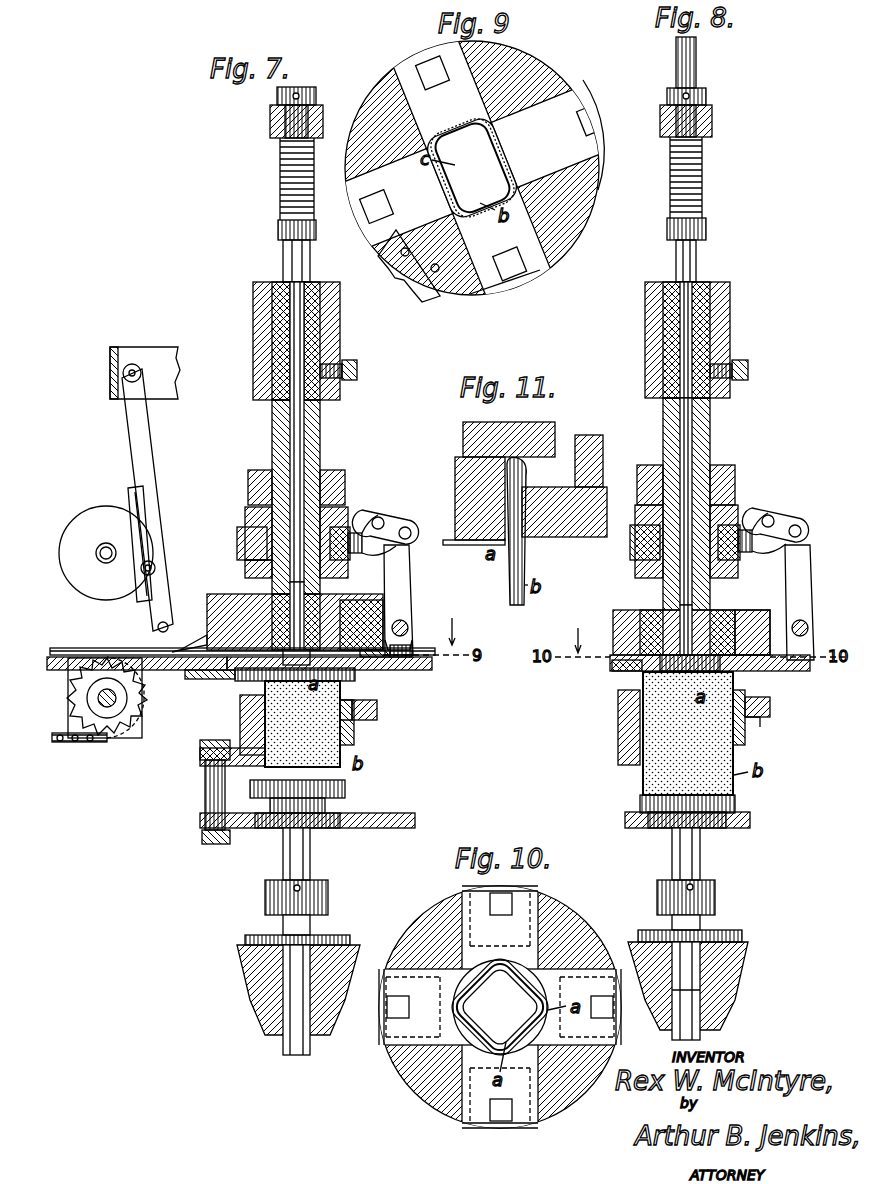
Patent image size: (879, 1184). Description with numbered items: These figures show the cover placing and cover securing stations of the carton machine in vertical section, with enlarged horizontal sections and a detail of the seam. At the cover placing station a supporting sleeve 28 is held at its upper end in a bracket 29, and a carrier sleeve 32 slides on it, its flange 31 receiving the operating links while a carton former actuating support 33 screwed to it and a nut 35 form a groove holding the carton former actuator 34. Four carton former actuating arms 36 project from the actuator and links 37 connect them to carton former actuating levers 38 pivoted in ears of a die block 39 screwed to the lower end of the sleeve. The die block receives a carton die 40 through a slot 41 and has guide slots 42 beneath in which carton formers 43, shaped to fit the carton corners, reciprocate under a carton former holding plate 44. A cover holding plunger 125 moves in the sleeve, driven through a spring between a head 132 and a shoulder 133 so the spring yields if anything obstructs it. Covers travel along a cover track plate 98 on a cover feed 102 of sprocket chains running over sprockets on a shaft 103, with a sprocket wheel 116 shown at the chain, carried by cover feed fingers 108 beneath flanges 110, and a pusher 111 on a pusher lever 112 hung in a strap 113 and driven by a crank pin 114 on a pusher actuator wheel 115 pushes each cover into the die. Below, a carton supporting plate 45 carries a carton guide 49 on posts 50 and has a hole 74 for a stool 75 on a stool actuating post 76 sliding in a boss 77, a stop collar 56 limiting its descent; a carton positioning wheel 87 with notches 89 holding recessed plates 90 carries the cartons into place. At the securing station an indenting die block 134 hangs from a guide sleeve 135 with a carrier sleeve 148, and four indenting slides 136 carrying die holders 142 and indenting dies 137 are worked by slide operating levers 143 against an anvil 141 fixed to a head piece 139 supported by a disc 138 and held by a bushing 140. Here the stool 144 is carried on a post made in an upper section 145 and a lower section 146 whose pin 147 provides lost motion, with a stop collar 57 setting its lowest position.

In FIG. 7, the supporting sleeve 28 is at (320, 432).
In FIG. 7, the bracket 29 is at (340, 342).
In FIG. 8, the bracket 29 is at (730, 342).
In FIG. 7, the flange 31 is at (340, 470).
In FIG. 7, the carrier sleeve 32 is at (340, 510).
In FIG. 7, the carton former actuating support 33 is at (250, 510).
In FIG. 7, the carton former actuator 34 is at (242, 532).
In FIG. 7, the nut 35 is at (247, 570).
In FIG. 8, the nut 35 is at (636, 570).
In FIG. 7, the carton former actuating arms 36 is at (388, 517).
In FIG. 7, the links 37 is at (408, 528).
In FIG. 7, the carton former actuating levers 38 is at (412, 578).
In FIG. 7, the die block 39 is at (380, 620).
In FIG. 9, the die block 39 is at (570, 190).
In FIG. 7, the carton die 40 is at (370, 612).
In FIG. 7, the slot 41 is at (215, 610).
In FIG. 7, the guide slots 42 is at (405, 668).
In FIG. 9, the guide slots 42 is at (588, 205).
In FIG. 7, the carton formers 43 is at (380, 668).
In FIG. 9, the carton formers 43 is at (528, 262).
In FIG. 7, the carton former holding plate 44 is at (232, 680).
In FIG. 7, the carton supporting plate 45 is at (378, 828).
In FIG. 8, the carton supporting plate 45 is at (750, 822).
In FIG. 7, the carton guide 49 is at (240, 717).
In FIG. 7, the posts 50 is at (206, 796).
In FIG. 7, the stop collar 56 is at (328, 890).
In FIG. 8, the stop collar 57 is at (715, 892).
In FIG. 7, the hole 74 is at (330, 812).
In FIG. 7, the stool 75 is at (345, 786).
In FIG. 7, the stool actuating post 76 is at (311, 845).
In FIG. 7, the boss 77 is at (250, 988).
In FIG. 8, the boss 77 is at (732, 970).
In FIG. 7, the carton positioning wheel 87 is at (377, 715).
In FIG. 8, the carton positioning wheel 87 is at (768, 718).
In FIG. 7, the notches 89 is at (376, 684).
In FIG. 8, the notches 89 is at (770, 704).
In FIG. 7, the recessed plates 90 is at (354, 736).
In FIG. 8, the recessed plates 90 is at (745, 740).
In FIG. 7, the cover track plate 98 is at (190, 678).
In FIG. 9, the cover track plate 98 is at (425, 288).
In FIG. 7, the cover feed 102 is at (70, 740).
In FIG. 7, the shaft 103 is at (107, 707).
In FIG. 7, the cover feed fingers 108 is at (80, 658).
In FIG. 7, the flanges 110 is at (128, 650).
In FIG. 7, the pusher 111 is at (200, 640).
In FIG. 7, the pusher lever 112 is at (153, 465).
In FIG. 7, the strap 113 is at (170, 348).
In FIG. 7, the crank pin 114 is at (142, 572).
In FIG. 7, the pusher actuator wheel 115 is at (106, 506).
In FIG. 7, the sprocket 116 is at (135, 735).
In FIG. 7, the cover holding plunger 125 is at (292, 428).
In FIG. 7, the head 132 is at (272, 118).
In FIG. 7, the shoulder 133 is at (280, 228).
In FIG. 8, the indenting die block 134 is at (628, 612).
In FIG. 10, the indenting die block 134 is at (572, 915).
In FIG. 8, the guide sleeve 135 is at (710, 432).
In FIG. 8, the indenting slides 136 is at (784, 677).
In FIG. 10, the indenting slides 136 is at (522, 905).
In FIG. 11, the indenting dies 137 is at (583, 525).
In FIG. 8, the indenting dies 137 is at (730, 671).
In FIG. 10, the indenting dies 137 is at (530, 990).
In FIG. 8, the disc 138 is at (726, 618).
In FIG. 11, the head piece 139 is at (552, 424).
In FIG. 8, the head piece 139 is at (758, 618).
In FIG. 8, the bushing 140 is at (652, 615).
In FIG. 11, the anvil 141 is at (458, 460).
In FIG. 8, the anvil 141 is at (640, 684).
In FIG. 11, the die holders 142 is at (590, 440).
In FIG. 8, the die holders 142 is at (620, 672).
In FIG. 10, the die holders 142 is at (535, 985).
In FIG. 8, the slide operating levers 143 is at (812, 577).
In FIG. 8, the stool 144 is at (735, 800).
In FIG. 8, the upper post section 145 is at (700, 858).
In FIG. 8, the lower post section 146 is at (700, 1012).
In FIG. 8, the pin 147 is at (740, 930).
In FIG. 8, the carrier sleeve 148 is at (728, 500).